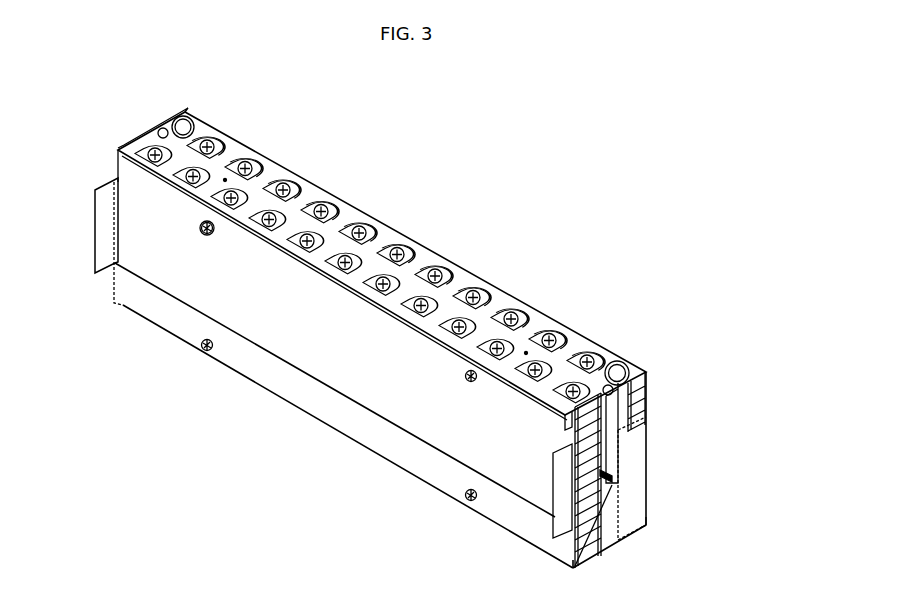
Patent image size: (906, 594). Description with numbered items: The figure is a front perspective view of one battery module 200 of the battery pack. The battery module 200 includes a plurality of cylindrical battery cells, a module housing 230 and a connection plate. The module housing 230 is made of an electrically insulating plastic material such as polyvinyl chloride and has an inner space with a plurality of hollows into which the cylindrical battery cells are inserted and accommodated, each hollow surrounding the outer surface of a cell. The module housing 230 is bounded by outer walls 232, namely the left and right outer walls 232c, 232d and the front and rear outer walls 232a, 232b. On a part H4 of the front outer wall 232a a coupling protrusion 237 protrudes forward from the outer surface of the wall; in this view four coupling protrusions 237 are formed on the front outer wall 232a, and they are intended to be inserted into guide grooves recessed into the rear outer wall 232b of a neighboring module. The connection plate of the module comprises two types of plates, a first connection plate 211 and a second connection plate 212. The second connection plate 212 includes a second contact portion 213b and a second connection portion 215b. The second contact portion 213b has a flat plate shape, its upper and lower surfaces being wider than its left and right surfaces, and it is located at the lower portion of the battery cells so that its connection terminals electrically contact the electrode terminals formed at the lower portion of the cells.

The battery module 200 is at (460, 158).
The first connection plate 211 is at (118, 164).
The second connection plate 212 is at (720, 448).
The second contact portion 213b is at (625, 537).
The second connection portion 215b is at (633, 457).
The module housing 230 is at (648, 383).
The outer walls 232 is at (707, 282).
The front outer wall 232a is at (362, 428).
The rear outer wall 232b is at (648, 403).
The left outer wall 232c is at (143, 147).
The right outer wall 232d is at (607, 438).
The coupling protrusion 237 is at (199, 231).
The part of the front outer wall H4 is at (201, 223).